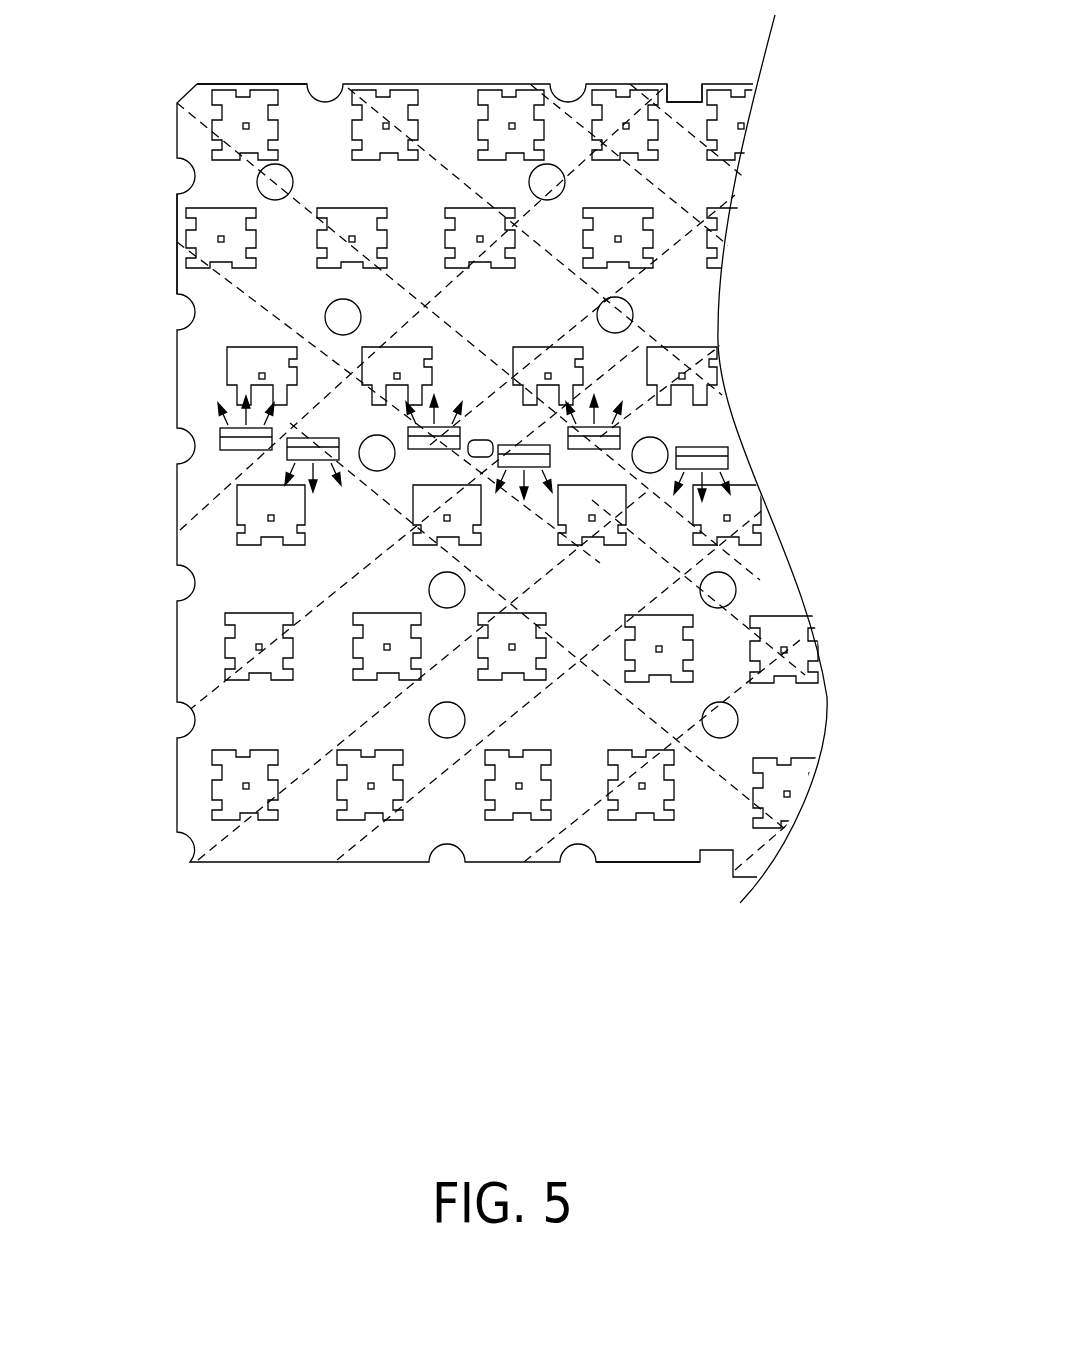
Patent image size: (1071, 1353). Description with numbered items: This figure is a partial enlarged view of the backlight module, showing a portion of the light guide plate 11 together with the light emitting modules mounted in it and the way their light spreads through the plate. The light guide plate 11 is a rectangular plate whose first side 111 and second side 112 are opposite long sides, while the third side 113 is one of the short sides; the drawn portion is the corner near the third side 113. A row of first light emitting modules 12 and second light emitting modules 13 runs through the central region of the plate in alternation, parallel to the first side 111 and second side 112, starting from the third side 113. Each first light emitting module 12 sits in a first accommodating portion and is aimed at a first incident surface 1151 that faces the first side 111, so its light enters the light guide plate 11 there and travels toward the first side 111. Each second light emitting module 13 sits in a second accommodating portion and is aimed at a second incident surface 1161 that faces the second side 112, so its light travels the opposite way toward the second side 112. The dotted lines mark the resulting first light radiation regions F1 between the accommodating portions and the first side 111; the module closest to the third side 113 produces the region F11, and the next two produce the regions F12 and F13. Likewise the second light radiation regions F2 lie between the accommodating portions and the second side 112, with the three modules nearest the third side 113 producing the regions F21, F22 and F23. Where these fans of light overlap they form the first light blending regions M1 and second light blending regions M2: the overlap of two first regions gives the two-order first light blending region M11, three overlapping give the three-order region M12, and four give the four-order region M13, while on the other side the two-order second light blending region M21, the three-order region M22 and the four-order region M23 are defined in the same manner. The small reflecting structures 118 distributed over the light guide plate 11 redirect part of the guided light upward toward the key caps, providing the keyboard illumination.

The light guide plate 11 is at (428, 108).
The first side 111 is at (353, 83).
The second side 112 is at (640, 862).
The third side 113 is at (185, 240).
The reflecting structures 118 is at (637, 102).
The first light emitting modules 12 is at (434, 408).
The second light emitting modules 13 is at (451, 496).
The first incident surfaces 1151 is at (178, 408).
The second incident surfaces 1161 is at (221, 496).
The first light blending regions M1 is at (406, 144).
The two-order first light blending region M11 is at (203, 192).
The three-order first light blending region M12 is at (287, 97).
The four-order first light blending region M13 is at (477, 100).
The second light blending regions M2 is at (427, 771).
The two-order second light blending region M21 is at (213, 737).
The three-order second light blending region M22 is at (275, 840).
The four-order second light blending region M23 is at (387, 846).
The first light radiation regions F1 is at (446, 342).
The first light radiation region F11 is at (200, 350).
The first light radiation region F12 is at (413, 337).
The first light radiation region F13 is at (643, 347).
The second light radiation regions F2 is at (492, 546).
The second light radiation region F21 is at (203, 603).
The second light radiation region F22 is at (557, 541).
The second light radiation region F23 is at (712, 517).